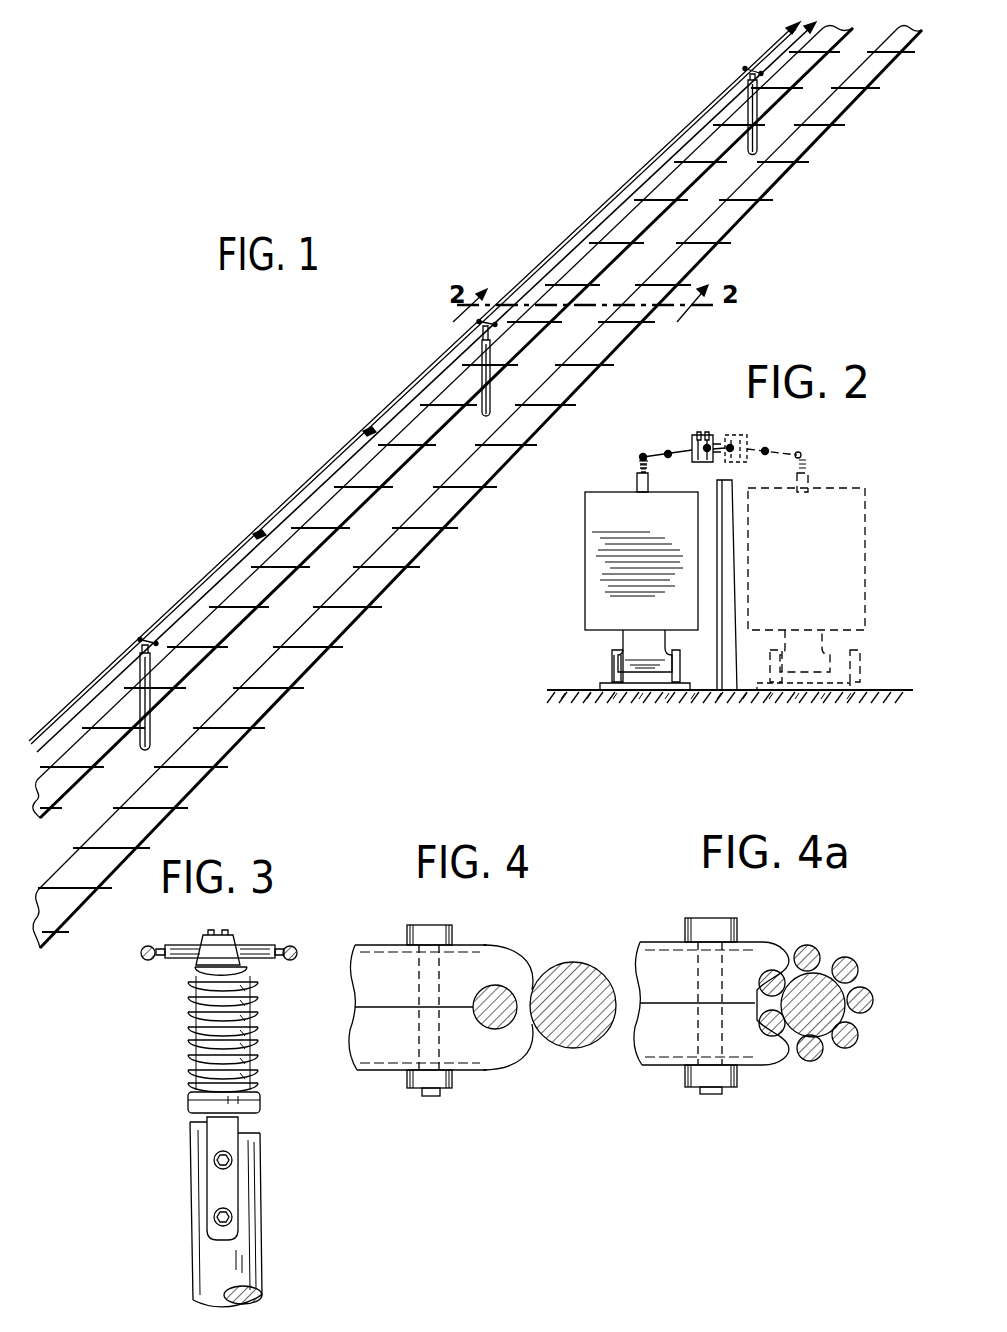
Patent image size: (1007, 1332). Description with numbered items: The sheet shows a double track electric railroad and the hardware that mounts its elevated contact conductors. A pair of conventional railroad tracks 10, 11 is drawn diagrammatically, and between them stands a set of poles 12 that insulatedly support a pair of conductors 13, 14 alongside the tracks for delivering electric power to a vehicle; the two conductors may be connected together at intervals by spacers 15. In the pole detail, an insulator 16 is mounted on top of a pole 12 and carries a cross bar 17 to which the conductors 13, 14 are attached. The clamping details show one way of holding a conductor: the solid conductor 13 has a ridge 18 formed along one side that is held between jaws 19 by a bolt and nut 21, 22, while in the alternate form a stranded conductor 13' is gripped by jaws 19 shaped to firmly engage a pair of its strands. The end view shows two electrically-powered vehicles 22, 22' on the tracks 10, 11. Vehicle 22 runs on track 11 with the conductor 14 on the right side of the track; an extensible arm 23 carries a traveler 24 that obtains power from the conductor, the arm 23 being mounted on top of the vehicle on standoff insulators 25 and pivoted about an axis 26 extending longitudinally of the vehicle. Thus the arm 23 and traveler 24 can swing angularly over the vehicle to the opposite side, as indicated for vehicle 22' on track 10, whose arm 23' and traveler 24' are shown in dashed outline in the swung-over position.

In FIG. 1, the railroad track 10 is at (417, 552).
In FIG. 2, the railroad track 10 is at (833, 682).
In FIG. 1, the railroad track 11 is at (319, 548).
In FIG. 2, the railroad track 11 is at (612, 682).
In FIG. 1, the pole 12 is at (757, 123).
In FIG. 2, the pole 12 is at (720, 527).
In FIG. 3, the pole 12 is at (195, 1205).
In FIG. 1, the conductor 13 is at (426, 387).
In FIG. 3, the conductor 13 is at (309, 929).
In FIG. 4, the conductor 13 is at (573, 982).
In FIG. 4A, the stranded conductor 13' is at (826, 985).
In FIG. 1, the conductor 14 is at (214, 564).
In FIG. 2, the conductor 14 is at (712, 447).
In FIG. 3, the conductor 14 is at (145, 942).
In FIG. 1, the spacer 15 is at (371, 428).
In FIG. 3, the insulator 16 is at (190, 1025).
In FIG. 3, the cross bar 17 is at (248, 945).
In FIG. 4, the ridge 18 is at (500, 997).
In FIG. 4, the jaws 19 is at (483, 950).
In FIG. 4A, the jaws 19 is at (767, 950).
In FIG. 4, the bolt 21 is at (425, 935).
In FIG. 2, the nut / vehicle 22 is at (610, 571).
In FIG. 4, the nut / vehicle 22 is at (400, 1096).
In FIG. 2, the vehicle 22' is at (826, 571).
In FIG. 2, the extensible arm 23 is at (652, 433).
In FIG. 2, the extensible arm 23' is at (793, 439).
In FIG. 2, the traveler 24 is at (700, 437).
In FIG. 2, the traveler 24' is at (749, 439).
In FIG. 2, the standoff insulator 25 is at (637, 464).
In FIG. 2, the pivot axis 26 is at (640, 455).